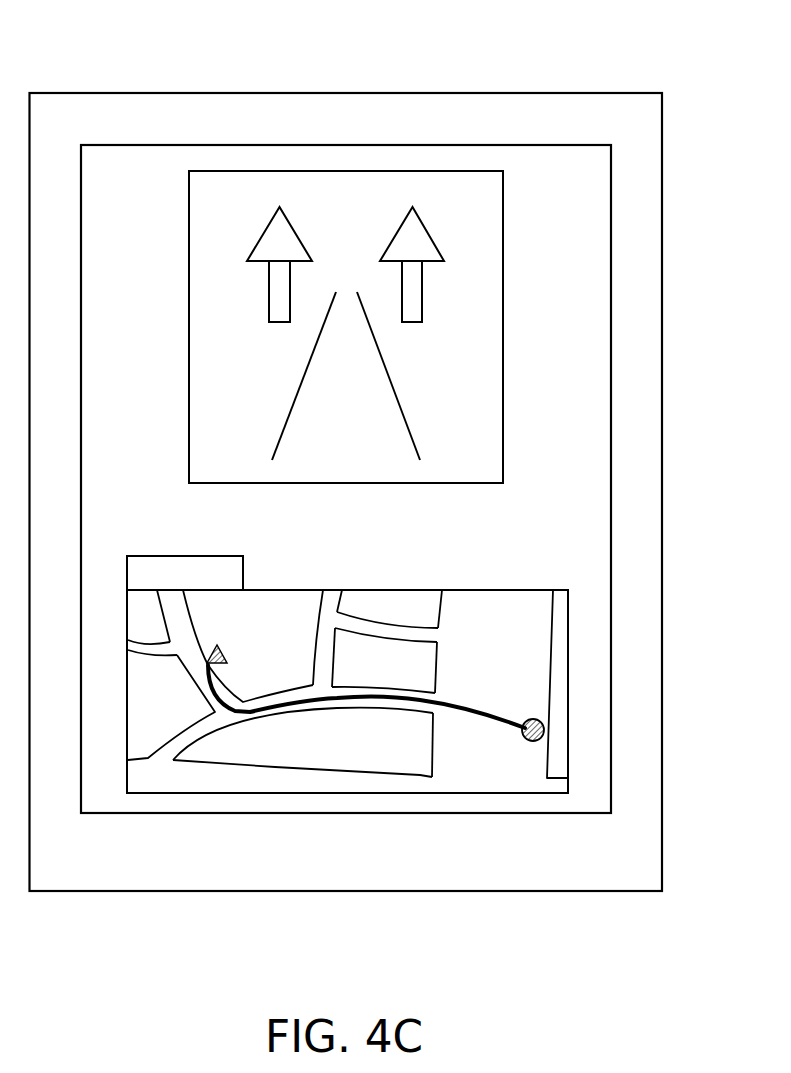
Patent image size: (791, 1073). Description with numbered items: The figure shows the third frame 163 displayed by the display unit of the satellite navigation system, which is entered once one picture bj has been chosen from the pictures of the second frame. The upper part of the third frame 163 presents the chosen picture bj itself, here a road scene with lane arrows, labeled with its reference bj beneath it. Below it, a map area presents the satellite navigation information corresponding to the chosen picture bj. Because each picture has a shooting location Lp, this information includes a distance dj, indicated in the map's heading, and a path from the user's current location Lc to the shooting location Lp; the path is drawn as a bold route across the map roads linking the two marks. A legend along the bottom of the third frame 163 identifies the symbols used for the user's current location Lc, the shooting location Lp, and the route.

The third frame 163 is at (721, 40).
The picture bj is at (346, 344).
The distance dj is at (345, 713).
The user's current location Lc is at (405, 846).
The shooting location Lp is at (263, 758).